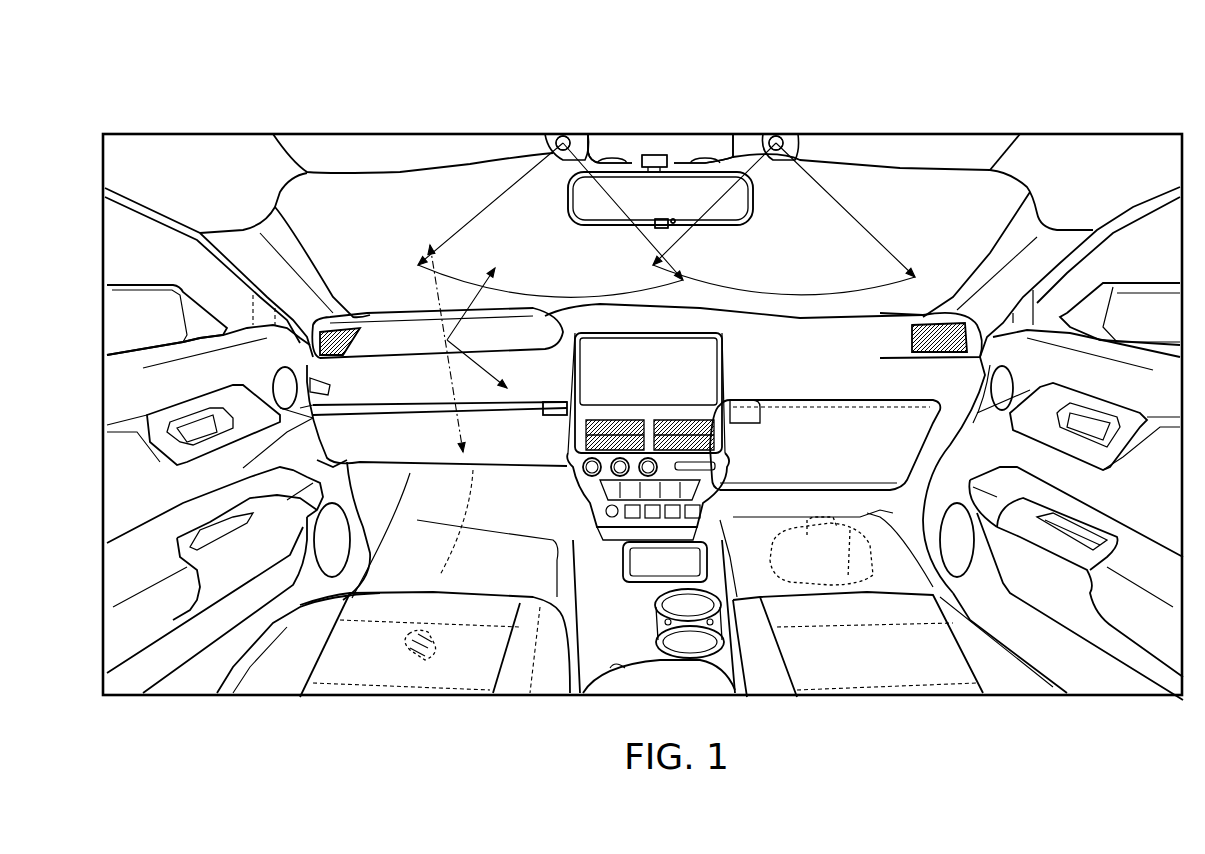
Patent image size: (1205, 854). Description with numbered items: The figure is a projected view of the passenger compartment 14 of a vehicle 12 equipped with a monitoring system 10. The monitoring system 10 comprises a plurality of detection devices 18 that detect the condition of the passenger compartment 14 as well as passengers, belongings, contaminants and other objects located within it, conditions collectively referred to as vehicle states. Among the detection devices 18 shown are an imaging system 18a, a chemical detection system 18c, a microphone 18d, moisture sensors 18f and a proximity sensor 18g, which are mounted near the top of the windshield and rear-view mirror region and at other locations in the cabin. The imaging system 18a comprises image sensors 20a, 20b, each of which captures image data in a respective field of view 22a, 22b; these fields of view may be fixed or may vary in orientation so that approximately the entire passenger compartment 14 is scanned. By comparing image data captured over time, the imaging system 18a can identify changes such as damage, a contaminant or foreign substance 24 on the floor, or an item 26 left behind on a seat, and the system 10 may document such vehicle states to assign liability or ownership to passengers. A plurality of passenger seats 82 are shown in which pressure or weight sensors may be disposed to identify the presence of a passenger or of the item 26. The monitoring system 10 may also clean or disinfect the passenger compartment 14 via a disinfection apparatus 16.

The monitoring system 10 is at (505, 143).
The vehicle 12 is at (1053, 134).
The passenger compartment 14 is at (160, 152).
The disinfection apparatus 16 is at (400, 203).
The detection devices 18 is at (447, 340).
The imaging system 18a is at (640, 219).
The chemical detection system 18c is at (673, 150).
The microphone 18d is at (660, 150).
The moisture sensors 18f is at (497, 567).
The proximity sensor 18g is at (665, 223).
The image sensor 20a is at (565, 136).
The image sensor 20b is at (781, 139).
The field of view 22a is at (572, 256).
The field of view 22b is at (810, 254).
The foreign substance 24 is at (410, 643).
The item 26 is at (822, 557).
The passenger seats 82 is at (878, 670).